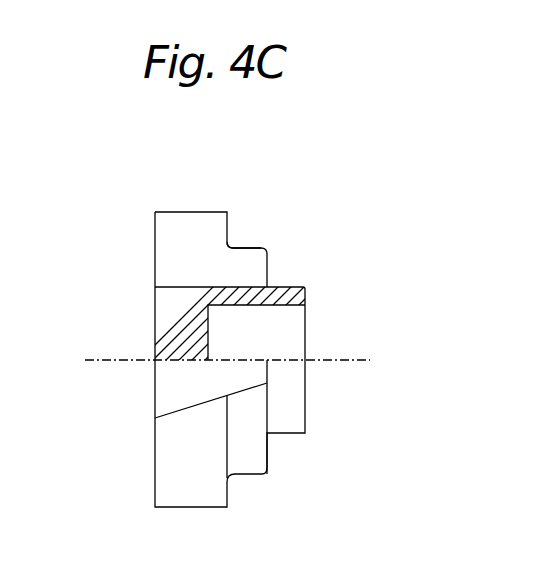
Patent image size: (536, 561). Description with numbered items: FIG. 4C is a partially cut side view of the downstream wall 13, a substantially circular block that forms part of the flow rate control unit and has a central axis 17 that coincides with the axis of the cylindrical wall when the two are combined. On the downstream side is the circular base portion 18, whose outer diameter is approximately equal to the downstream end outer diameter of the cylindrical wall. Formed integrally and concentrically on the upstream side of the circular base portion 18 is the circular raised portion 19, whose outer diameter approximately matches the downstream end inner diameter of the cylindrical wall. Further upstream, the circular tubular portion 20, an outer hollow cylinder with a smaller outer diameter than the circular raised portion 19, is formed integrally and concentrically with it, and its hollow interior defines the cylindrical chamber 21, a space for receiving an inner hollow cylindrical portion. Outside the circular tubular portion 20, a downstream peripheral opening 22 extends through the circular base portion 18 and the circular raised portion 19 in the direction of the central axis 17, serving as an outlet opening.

The downstream wall 13 is at (224, 196).
The central axis 17 is at (102, 353).
The circular base portion 18 is at (183, 212).
The circular raised portion 19 is at (250, 243).
The circular tubular portion 20 is at (291, 287).
The cylindrical chamber 21 is at (283, 339).
The downstream peripheral opening 22 is at (190, 405).